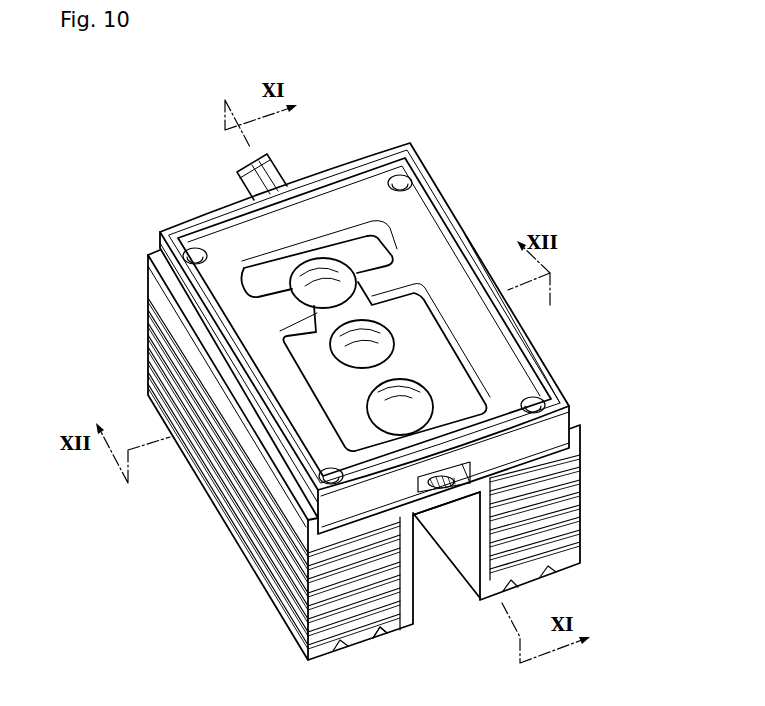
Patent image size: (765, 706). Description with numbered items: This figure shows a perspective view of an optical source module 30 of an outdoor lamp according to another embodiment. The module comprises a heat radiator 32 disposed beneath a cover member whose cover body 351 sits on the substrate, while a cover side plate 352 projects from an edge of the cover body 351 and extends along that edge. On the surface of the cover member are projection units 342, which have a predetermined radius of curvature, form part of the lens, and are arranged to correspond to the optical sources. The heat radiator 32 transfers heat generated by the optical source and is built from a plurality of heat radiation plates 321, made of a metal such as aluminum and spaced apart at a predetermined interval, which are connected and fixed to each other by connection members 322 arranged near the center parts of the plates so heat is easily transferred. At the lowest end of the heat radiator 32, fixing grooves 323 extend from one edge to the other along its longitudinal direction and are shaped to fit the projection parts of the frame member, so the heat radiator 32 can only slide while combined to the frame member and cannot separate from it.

The optical source module 30 is at (450, 128).
The heat radiator 32 is at (265, 610).
The heat radiation plates 321 is at (583, 491).
The connection members 322 is at (486, 557).
The fixing grooves 323 is at (378, 637).
The projection units 342 is at (383, 333).
The cover body 351 is at (356, 196).
The cover side plate 352 is at (542, 360).